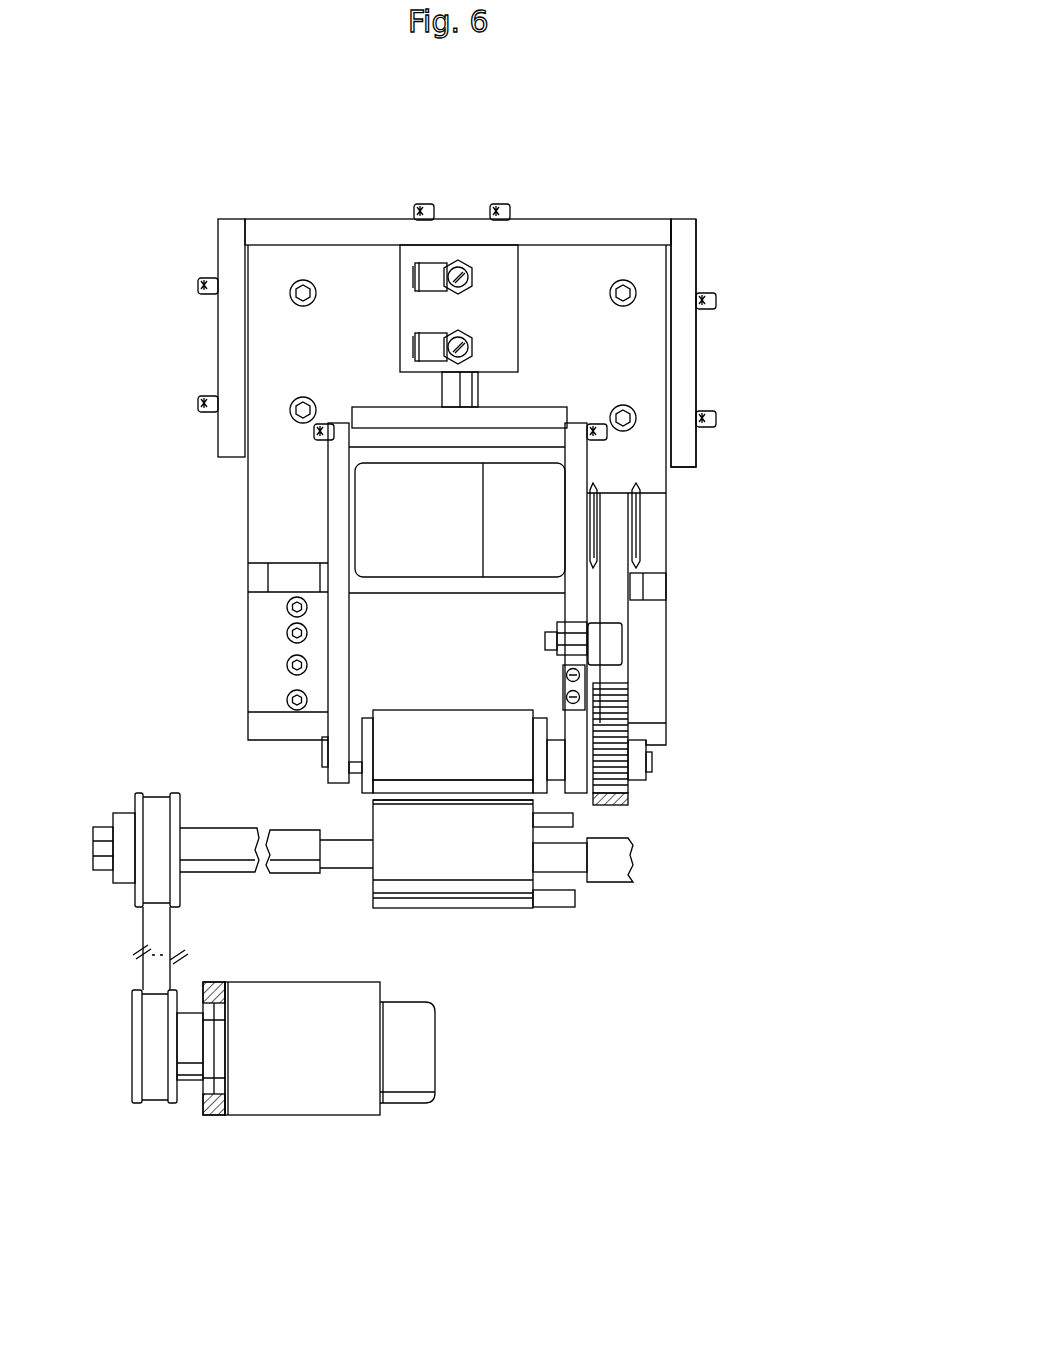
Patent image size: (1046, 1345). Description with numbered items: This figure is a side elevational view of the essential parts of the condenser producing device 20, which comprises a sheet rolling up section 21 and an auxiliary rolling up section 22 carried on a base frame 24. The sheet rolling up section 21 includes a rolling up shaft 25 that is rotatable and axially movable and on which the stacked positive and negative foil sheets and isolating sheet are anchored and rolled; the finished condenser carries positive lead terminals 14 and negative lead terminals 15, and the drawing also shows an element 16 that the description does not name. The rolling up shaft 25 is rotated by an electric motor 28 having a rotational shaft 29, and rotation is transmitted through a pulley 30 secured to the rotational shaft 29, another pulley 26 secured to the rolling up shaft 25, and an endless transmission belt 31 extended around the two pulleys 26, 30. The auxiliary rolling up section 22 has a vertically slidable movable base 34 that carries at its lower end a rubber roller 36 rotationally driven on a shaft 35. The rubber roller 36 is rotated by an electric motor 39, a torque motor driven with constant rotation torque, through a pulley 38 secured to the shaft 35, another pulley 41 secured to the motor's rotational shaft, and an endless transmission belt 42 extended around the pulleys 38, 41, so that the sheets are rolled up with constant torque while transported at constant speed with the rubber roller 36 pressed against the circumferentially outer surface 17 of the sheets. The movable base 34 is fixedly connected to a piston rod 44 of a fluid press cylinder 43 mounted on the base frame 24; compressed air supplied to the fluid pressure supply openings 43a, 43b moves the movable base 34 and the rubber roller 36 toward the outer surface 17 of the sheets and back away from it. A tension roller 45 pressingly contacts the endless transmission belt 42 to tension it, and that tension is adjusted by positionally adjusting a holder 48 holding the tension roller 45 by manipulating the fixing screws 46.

The positive lead terminals 14 is at (567, 836).
The negative lead terminals 15 is at (568, 910).
The roller 16 is at (493, 908).
The circumferentially outer surface 17 is at (437, 912).
The condenser producing device 20 is at (760, 192).
The sheet rolling up section 21 is at (490, 1090).
The auxiliary rolling up section 22 is at (797, 512).
The base frame 24 is at (700, 342).
The rolling up shaft 25 is at (295, 875).
The pulley 26 is at (135, 797).
The electric motor 28 is at (277, 1115).
The rotational shaft 29 is at (190, 1085).
The pulley 30 is at (132, 1045).
The endless transmission belt 31 is at (142, 965).
The movable base 34 is at (328, 505).
The shaft 35 is at (652, 762).
The rubber roller 36 is at (445, 710).
The pulley 38 is at (633, 795).
The electric motor 39 is at (405, 592).
The pulley 41 is at (690, 493).
The endless transmission belt 42 is at (666, 617).
The fluid press cylinder 43 is at (530, 268).
The fluid pressure supply opening 43a is at (462, 262).
The fluid pressure supply opening 43b is at (440, 330).
The piston rod 44 is at (480, 405).
The tension roller 45 is at (622, 645).
The fixing screws 46 is at (566, 697).
The holder 48 is at (530, 718).